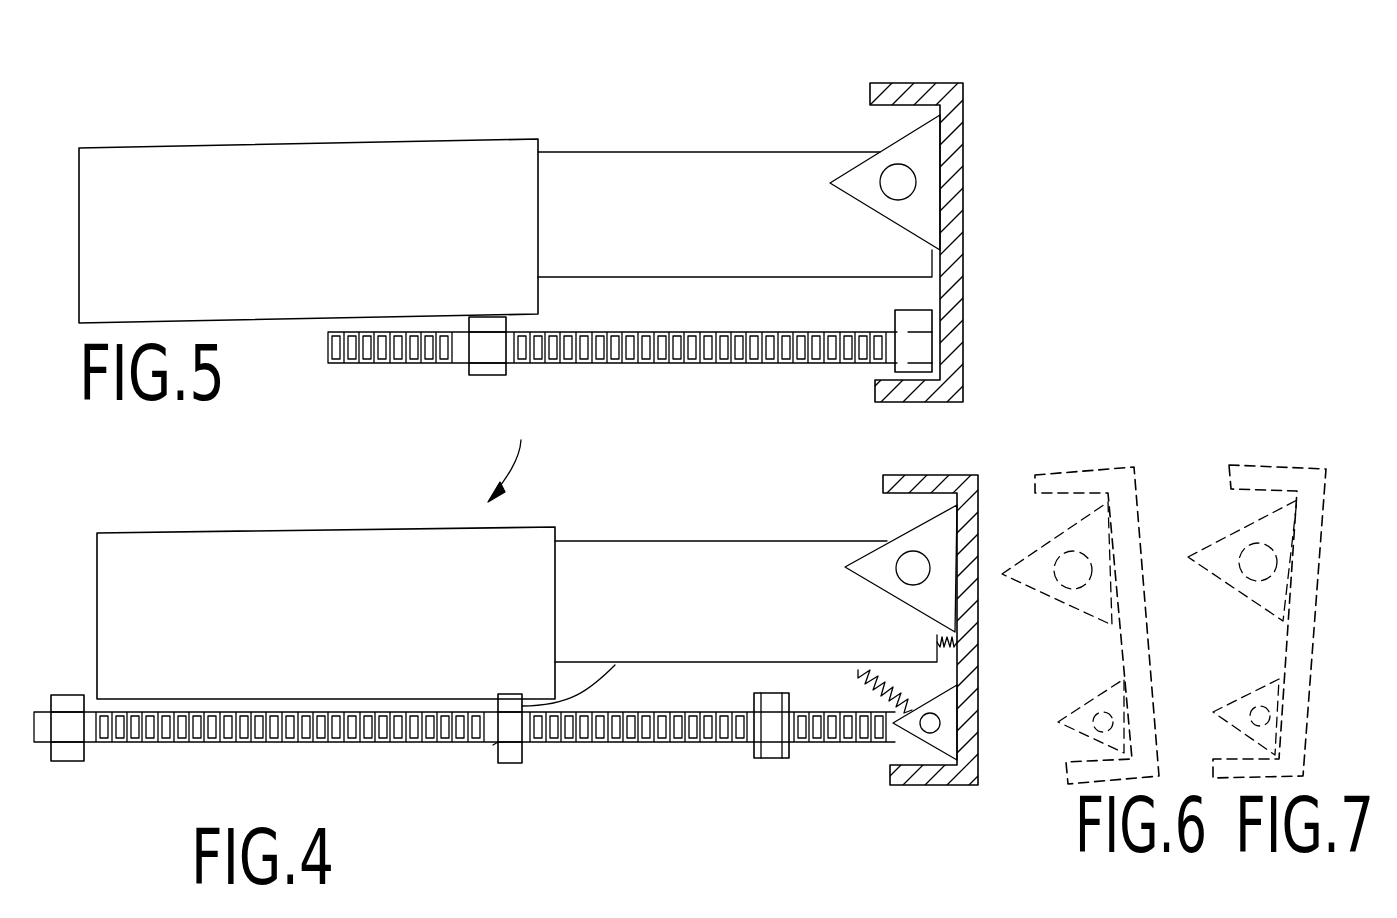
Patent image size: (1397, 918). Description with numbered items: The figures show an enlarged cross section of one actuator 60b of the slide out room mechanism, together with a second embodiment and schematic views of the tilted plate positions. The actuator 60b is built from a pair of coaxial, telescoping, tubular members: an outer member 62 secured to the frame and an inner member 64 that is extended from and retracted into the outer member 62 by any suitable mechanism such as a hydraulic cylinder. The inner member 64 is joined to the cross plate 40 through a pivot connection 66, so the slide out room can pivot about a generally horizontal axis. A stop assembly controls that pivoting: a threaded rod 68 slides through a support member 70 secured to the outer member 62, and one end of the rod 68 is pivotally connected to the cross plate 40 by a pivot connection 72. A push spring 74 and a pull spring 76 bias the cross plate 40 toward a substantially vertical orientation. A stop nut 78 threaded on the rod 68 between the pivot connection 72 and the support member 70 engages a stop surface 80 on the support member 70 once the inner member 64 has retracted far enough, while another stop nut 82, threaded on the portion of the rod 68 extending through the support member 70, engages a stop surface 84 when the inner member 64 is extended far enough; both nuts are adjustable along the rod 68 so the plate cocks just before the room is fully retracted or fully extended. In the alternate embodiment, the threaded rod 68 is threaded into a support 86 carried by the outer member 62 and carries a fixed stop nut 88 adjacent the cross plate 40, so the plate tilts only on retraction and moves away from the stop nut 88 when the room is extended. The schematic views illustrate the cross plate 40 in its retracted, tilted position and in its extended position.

In FIG. 5, the cross plate 40 is at (948, 183).
In FIG. 4, the cross plate 40 is at (963, 672).
In FIG. 6, the cross plate 40 is at (1134, 714).
In FIG. 7, the cross plate 40 is at (1291, 691).
In FIG. 4, the actuator 60b is at (528, 450).
In FIG. 5, the outer member 62 is at (441, 181).
In FIG. 4, the outer member 62 is at (349, 561).
In FIG. 5, the inner member 64 is at (695, 190).
In FIG. 4, the inner member 64 is at (648, 567).
In FIG. 5, the pivot connection 66 is at (895, 183).
In FIG. 4, the pivot connection 66 is at (912, 562).
In FIG. 6, the pivot connection 66 is at (1081, 564).
In FIG. 7, the pivot connection 66 is at (1258, 559).
In FIG. 5, the threaded rod 68 is at (646, 350).
In FIG. 4, the threaded rod 68 is at (610, 741).
In FIG. 4, the support member 70 is at (512, 764).
In FIG. 4, the pivot connection 72 is at (930, 727).
In FIG. 6, the pivot connection 72 is at (1095, 735).
In FIG. 7, the pivot connection 72 is at (1262, 722).
In FIG. 4, the push spring 74 is at (955, 633).
In FIG. 4, the pull spring 76 is at (883, 677).
In FIG. 4, the stop nut 78 is at (771, 732).
In FIG. 4, the stop surface 80 is at (615, 665).
In FIG. 4, the stop nut 82 is at (67, 761).
In FIG. 4, the stop surface 84 is at (493, 745).
In FIG. 5, the support 86 is at (476, 372).
In FIG. 5, the stop nut 88 is at (910, 335).